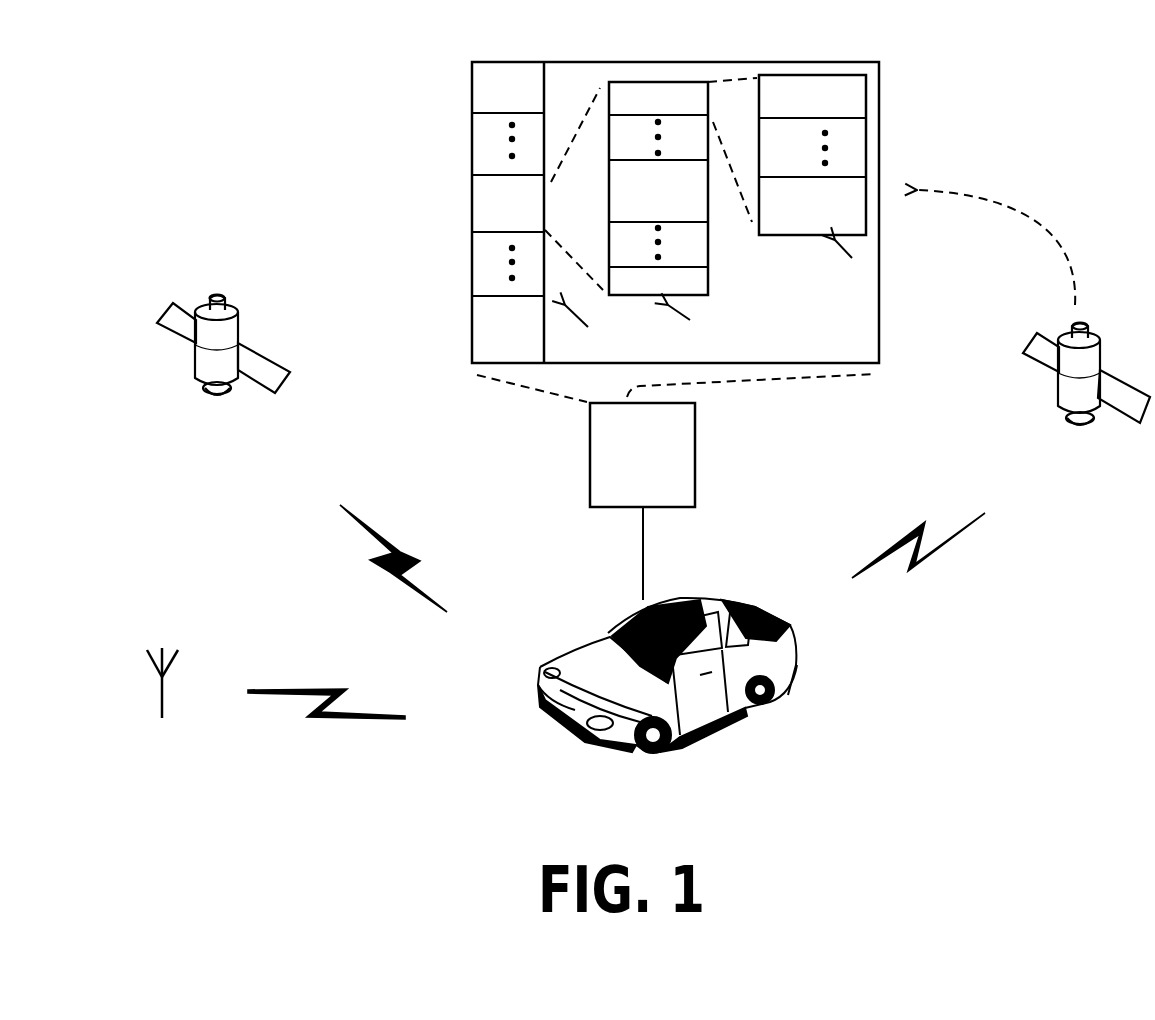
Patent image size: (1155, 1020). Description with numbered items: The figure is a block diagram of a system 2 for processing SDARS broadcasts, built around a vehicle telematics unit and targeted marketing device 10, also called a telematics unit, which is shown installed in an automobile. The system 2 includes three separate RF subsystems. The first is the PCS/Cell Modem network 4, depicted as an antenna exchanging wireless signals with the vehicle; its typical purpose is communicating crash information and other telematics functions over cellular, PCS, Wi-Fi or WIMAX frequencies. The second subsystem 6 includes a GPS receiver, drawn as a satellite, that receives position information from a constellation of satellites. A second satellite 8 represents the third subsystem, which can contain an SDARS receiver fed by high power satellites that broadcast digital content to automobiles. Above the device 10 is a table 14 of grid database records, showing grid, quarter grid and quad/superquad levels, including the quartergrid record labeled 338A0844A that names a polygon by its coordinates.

The system 2 is at (1048, 803).
The PCS/Cell Modem network 4 is at (342, 810).
The second subsystem 6 is at (360, 455).
The satellite 8 is at (1075, 513).
The device 10 is at (695, 428).
The table 14 is at (879, 75).